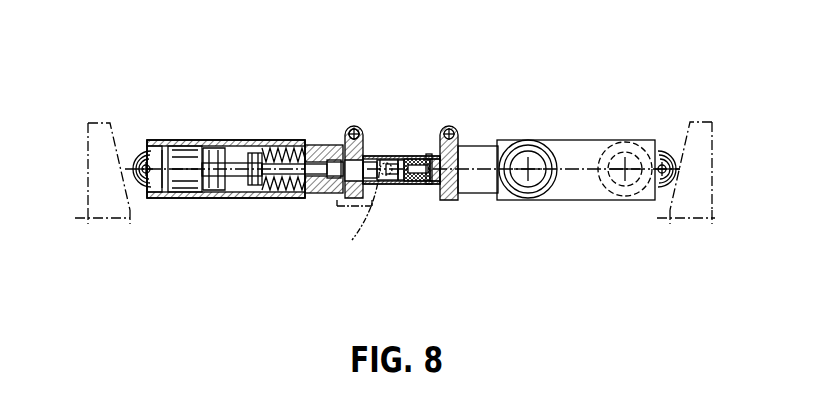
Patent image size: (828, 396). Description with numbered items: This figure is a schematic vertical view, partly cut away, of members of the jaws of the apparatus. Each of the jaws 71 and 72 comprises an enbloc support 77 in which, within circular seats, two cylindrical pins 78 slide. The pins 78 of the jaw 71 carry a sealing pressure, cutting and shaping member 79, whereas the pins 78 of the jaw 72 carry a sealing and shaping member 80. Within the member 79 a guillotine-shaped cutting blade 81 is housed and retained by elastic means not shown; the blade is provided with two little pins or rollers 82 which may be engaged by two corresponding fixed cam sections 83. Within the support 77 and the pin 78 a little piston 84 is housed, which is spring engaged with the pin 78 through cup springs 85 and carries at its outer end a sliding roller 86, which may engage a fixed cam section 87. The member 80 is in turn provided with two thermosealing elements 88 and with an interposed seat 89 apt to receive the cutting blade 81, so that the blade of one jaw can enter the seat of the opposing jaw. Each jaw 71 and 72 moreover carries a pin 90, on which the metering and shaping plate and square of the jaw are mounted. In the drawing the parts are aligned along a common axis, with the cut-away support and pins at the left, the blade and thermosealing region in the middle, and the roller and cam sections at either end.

The jaw 71 is at (270, 138).
The jaw 72 is at (547, 137).
The enbloc support 77 is at (580, 152).
The cylindrical pin 78 is at (313, 142).
The sealing pressure, cutting and shaping member 79 is at (388, 153).
The sealing and shaping member 80 is at (418, 153).
The guillotine-shaped cutting blade 81 is at (395, 184).
The little pin or roller 82 is at (380, 158).
The fixed cam section 83 is at (356, 213).
The little piston 84 is at (210, 140).
The cup springs 85 is at (288, 140).
The sliding roller 86 is at (131, 148).
The fixed cam section 87 is at (102, 208).
The thermosealing element 88 is at (403, 157).
The interposed seat 89 is at (425, 184).
The pin 90 is at (353, 128).